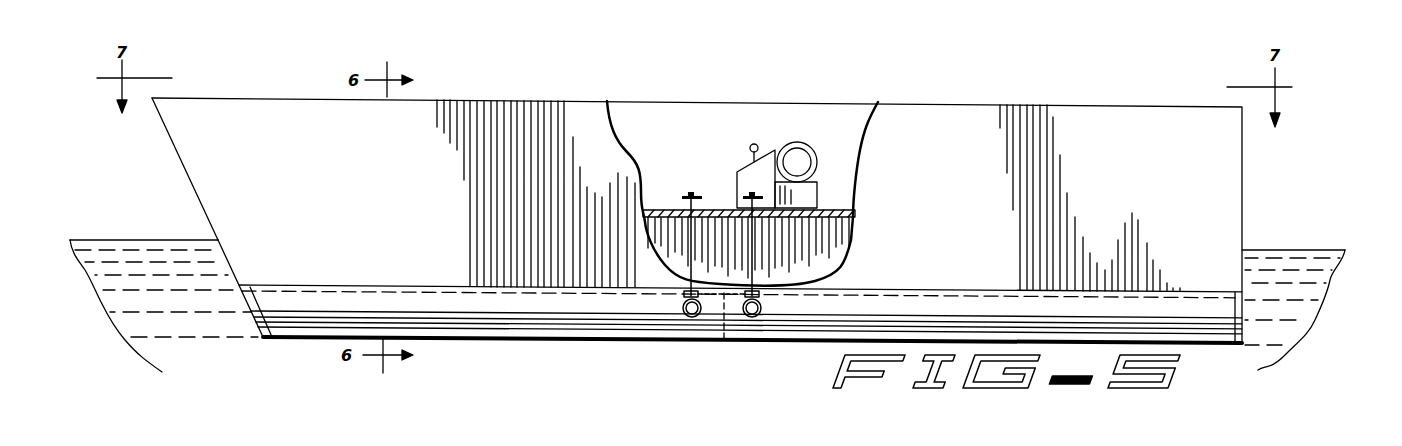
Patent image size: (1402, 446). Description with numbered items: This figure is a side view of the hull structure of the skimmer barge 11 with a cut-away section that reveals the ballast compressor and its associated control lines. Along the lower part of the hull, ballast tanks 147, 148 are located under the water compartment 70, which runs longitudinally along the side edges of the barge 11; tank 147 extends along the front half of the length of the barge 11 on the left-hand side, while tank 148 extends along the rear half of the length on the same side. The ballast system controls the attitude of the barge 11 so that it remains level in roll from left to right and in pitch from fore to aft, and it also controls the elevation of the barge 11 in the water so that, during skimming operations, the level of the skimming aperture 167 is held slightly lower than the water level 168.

The barge 11 is at (565, 104).
The water compartment 70 is at (237, 258).
The ballast tank 147 is at (481, 307).
The ballast tank 148 is at (983, 311).
The skimming aperture 167 is at (224, 243).
The water level 168 is at (170, 240).